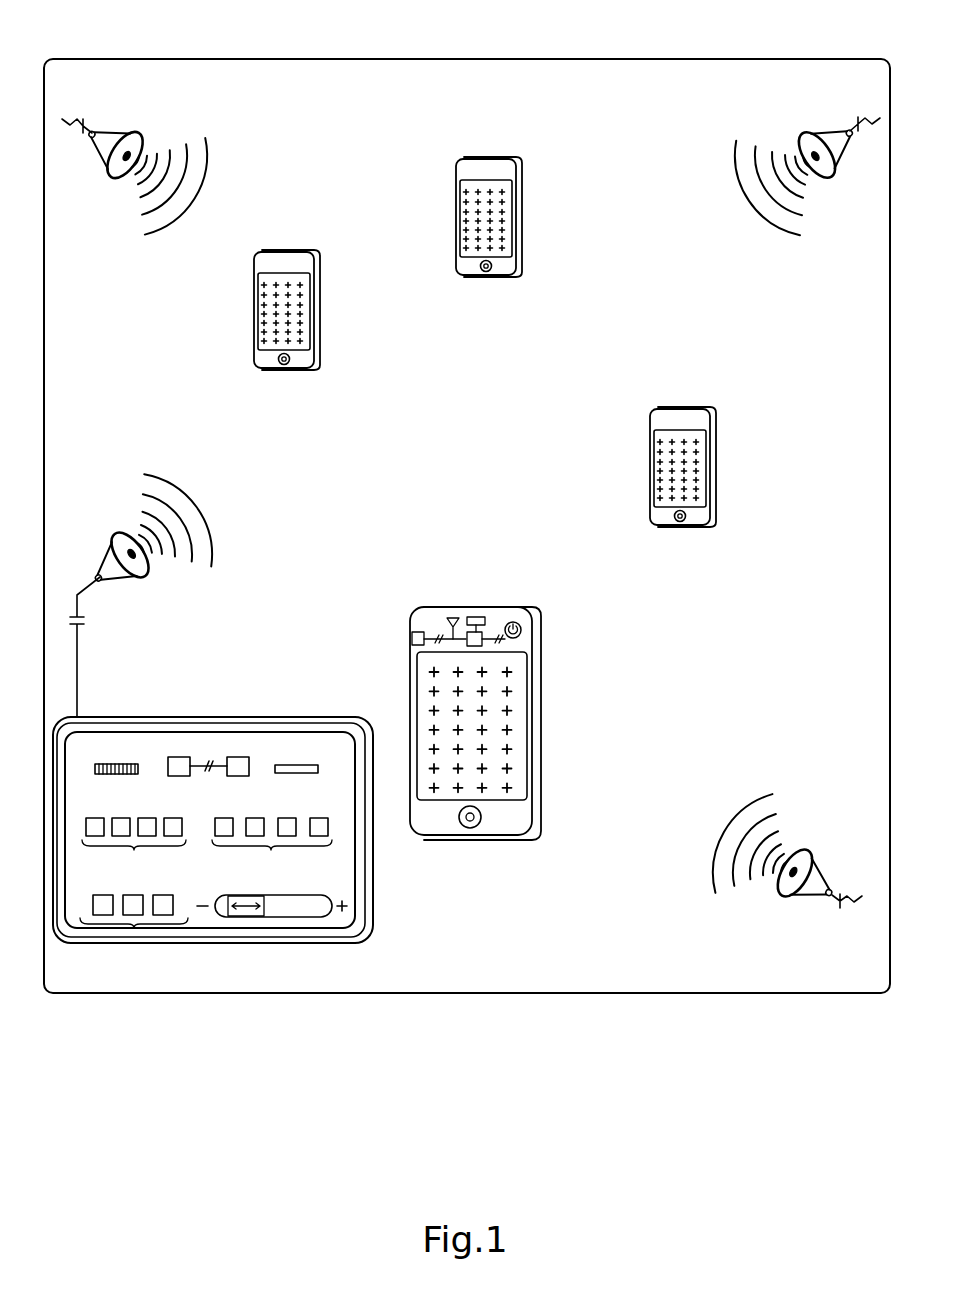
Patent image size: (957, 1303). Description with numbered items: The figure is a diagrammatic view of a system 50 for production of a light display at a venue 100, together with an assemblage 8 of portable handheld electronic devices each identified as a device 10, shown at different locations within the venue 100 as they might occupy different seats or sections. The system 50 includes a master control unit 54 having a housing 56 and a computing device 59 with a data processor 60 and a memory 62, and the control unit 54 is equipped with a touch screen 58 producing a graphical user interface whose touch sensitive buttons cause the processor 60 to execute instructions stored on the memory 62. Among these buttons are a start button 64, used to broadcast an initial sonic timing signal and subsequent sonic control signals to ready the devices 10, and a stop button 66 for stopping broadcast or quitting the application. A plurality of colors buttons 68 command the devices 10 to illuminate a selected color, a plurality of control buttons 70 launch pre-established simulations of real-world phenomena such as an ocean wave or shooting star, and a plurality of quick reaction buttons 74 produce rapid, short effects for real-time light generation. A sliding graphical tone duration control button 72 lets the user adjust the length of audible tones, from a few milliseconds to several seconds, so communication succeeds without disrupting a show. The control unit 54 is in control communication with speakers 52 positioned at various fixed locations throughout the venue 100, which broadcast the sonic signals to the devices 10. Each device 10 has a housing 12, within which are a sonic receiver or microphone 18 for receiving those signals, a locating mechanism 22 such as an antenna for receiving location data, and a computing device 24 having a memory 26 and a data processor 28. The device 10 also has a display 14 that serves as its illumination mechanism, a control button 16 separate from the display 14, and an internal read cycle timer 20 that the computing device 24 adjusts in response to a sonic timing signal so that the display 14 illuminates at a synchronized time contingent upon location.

The venue 100 is at (466, 58).
The assemblage of portable handheld electronic devices 8 is at (186, 338).
The portable handheld electronic device 10 is at (326, 258).
The housing 12 is at (537, 838).
The display 14 is at (518, 788).
The control button 16 is at (472, 829).
The sonic receiver or microphone 18 is at (411, 639).
The internal read cycle timer 20 is at (524, 632).
The locating mechanism 22 is at (447, 632).
The computing device 24 is at (491, 628).
The memory 26 is at (486, 616).
The data processor 28 is at (472, 631).
The system for production of a light display 50 is at (240, 831).
The speaker 52 is at (120, 135).
The master control unit 54 is at (319, 943).
The housing 56 is at (284, 723).
The touch screen 58 is at (204, 929).
The computing device 59 is at (205, 752).
The data processor 60 is at (178, 757).
The memory 62 is at (240, 757).
The start button 64 is at (98, 774).
The stop button 66 is at (316, 773).
The colors buttons 68 is at (134, 842).
The control buttons 70 is at (272, 844).
The sliding graphical tone duration control button 72 is at (272, 918).
The quick reaction control buttons 74 is at (128, 926).